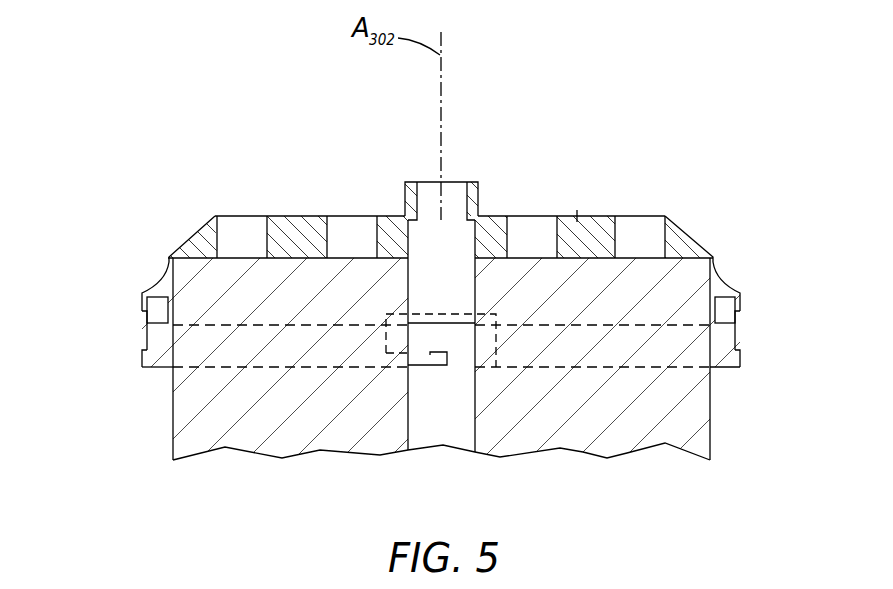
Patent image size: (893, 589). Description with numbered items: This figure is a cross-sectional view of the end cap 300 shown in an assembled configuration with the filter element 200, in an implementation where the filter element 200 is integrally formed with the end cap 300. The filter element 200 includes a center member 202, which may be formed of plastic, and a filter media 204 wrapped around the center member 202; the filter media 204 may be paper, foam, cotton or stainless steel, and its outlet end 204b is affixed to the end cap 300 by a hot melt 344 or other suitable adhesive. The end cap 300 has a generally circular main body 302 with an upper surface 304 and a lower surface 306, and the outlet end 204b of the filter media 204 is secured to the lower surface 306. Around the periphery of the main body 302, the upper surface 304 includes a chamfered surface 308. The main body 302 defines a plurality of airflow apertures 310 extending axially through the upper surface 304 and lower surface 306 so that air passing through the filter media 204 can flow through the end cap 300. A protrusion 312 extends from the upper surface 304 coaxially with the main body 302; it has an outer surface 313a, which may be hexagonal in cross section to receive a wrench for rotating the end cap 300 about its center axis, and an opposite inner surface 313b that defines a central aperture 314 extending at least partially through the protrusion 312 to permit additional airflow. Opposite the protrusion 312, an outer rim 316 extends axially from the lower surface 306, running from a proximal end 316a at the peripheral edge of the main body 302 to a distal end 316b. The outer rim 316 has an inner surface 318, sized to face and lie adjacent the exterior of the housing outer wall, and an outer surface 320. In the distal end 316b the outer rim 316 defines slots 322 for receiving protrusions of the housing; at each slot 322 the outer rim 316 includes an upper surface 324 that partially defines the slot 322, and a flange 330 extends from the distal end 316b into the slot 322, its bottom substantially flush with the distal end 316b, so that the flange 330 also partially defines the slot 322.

The filter element 200 is at (670, 460).
The center member 202 is at (454, 434).
The filter media 204 is at (172, 433).
The outlet end 204b is at (648, 257).
The end cap 300 is at (179, 113).
The main body 302 is at (306, 210).
The upper surface 304 is at (577, 216).
The lower surface 306 is at (585, 260).
The chamfered surface 308 is at (687, 226).
The airflow apertures 310 is at (230, 225).
The protrusion 312 is at (485, 188).
The outer surface 313a is at (394, 188).
The inner surface 313b is at (430, 182).
The central aperture 314 is at (450, 182).
The outer rim 316 is at (118, 248).
The proximal end 316a is at (168, 256).
The distal end 316b is at (162, 353).
The inner surface 318 is at (183, 277).
The outer surface 320 is at (725, 275).
The slots 322 is at (141, 336).
The upper surface 324 is at (142, 318).
The flange 330 is at (141, 358).
The hot melt 344 is at (292, 253).